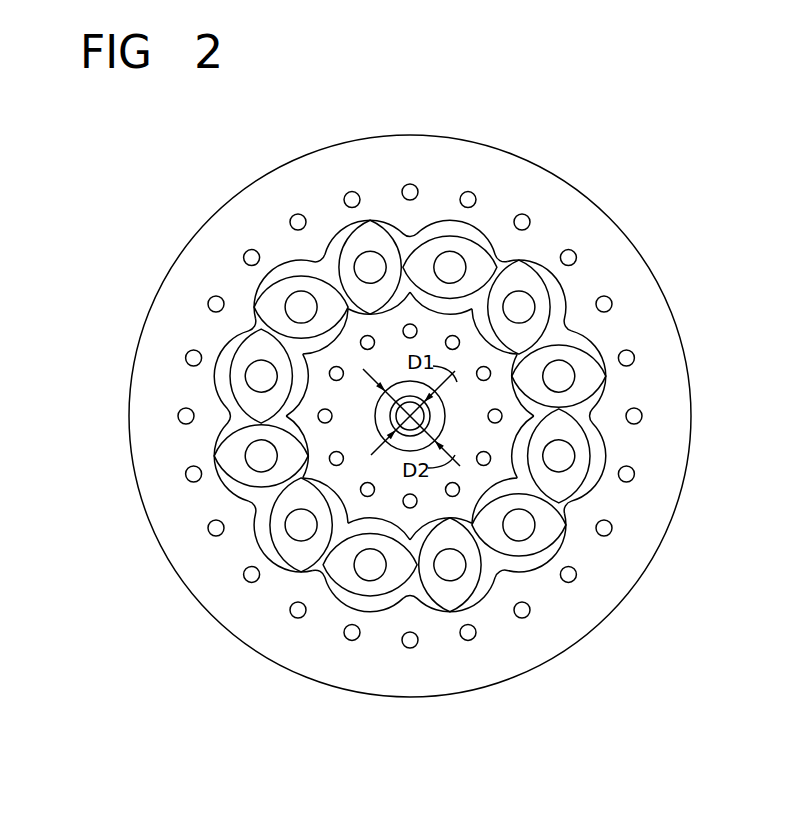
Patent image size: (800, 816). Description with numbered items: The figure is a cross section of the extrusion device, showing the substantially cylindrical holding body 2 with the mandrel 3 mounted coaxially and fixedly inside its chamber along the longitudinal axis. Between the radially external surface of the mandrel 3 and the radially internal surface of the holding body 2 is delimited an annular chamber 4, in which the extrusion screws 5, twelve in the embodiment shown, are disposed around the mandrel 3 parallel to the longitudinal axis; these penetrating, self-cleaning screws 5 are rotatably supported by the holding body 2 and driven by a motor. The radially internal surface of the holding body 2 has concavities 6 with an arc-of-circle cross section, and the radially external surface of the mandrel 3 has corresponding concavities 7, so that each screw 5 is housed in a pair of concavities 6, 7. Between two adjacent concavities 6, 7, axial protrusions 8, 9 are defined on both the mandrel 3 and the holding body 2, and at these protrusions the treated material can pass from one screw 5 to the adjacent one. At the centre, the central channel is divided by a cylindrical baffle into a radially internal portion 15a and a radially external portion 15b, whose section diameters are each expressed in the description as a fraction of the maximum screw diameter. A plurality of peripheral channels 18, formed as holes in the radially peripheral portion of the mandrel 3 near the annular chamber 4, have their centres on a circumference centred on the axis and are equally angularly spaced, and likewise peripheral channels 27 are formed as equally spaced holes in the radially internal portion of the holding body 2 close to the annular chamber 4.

The holding body 2 is at (593, 187).
The mandrel 3 is at (379, 524).
The annular chamber 4 is at (564, 302).
The extrusion screws 5 is at (481, 260).
The concavities 6 is at (443, 220).
The concavities 7 is at (515, 513).
The axial protrusions 8 is at (320, 578).
The axial protrusions 9 is at (362, 494).
The radially internal portion 15a is at (397, 416).
The radially external portion 15b is at (406, 381).
The peripheral channels 18 is at (484, 374).
The peripheral channels 27 is at (407, 184).